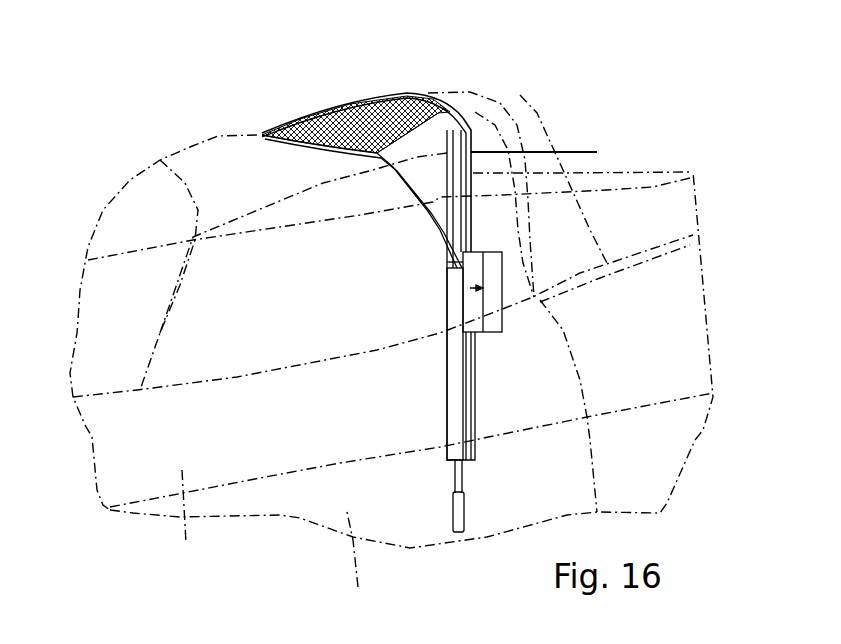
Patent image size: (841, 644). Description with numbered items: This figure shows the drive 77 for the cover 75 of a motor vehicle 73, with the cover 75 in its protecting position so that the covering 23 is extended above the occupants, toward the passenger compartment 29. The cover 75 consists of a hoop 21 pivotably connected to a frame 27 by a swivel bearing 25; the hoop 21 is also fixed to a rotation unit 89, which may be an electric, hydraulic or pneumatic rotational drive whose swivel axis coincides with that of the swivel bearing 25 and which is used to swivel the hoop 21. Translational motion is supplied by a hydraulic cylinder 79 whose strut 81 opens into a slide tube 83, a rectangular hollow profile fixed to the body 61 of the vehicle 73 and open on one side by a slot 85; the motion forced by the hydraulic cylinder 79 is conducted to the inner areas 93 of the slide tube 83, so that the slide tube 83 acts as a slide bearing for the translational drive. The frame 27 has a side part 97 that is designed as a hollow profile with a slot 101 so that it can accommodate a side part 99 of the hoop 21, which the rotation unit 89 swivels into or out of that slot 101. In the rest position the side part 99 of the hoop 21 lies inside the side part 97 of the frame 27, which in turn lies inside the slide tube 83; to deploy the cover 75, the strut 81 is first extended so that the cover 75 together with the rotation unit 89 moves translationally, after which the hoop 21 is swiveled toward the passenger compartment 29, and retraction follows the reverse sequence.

The hoop 21 is at (423, 218).
The covering 23 is at (413, 98).
The swivel bearing 25 is at (447, 262).
The frame 27 is at (435, 105).
The passenger compartment 29 is at (312, 290).
The body 61 is at (184, 523).
The motor vehicle 73 is at (357, 562).
The cover 75 is at (345, 93).
The drive 77 is at (427, 352).
The hydraulic cylinder 79 is at (465, 515).
The strut 81 is at (462, 478).
The slide tube 83 is at (455, 395).
The slot 85 is at (475, 373).
The rotation unit 89 is at (500, 325).
The inner areas 93 is at (475, 417).
The side part of frame 97 is at (470, 150).
The side part of hoop 99 is at (410, 197).
The slot 101 is at (597, 152).